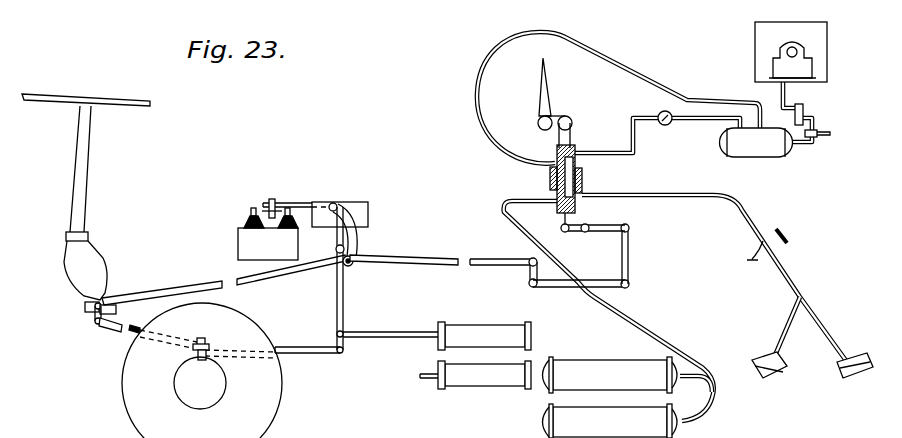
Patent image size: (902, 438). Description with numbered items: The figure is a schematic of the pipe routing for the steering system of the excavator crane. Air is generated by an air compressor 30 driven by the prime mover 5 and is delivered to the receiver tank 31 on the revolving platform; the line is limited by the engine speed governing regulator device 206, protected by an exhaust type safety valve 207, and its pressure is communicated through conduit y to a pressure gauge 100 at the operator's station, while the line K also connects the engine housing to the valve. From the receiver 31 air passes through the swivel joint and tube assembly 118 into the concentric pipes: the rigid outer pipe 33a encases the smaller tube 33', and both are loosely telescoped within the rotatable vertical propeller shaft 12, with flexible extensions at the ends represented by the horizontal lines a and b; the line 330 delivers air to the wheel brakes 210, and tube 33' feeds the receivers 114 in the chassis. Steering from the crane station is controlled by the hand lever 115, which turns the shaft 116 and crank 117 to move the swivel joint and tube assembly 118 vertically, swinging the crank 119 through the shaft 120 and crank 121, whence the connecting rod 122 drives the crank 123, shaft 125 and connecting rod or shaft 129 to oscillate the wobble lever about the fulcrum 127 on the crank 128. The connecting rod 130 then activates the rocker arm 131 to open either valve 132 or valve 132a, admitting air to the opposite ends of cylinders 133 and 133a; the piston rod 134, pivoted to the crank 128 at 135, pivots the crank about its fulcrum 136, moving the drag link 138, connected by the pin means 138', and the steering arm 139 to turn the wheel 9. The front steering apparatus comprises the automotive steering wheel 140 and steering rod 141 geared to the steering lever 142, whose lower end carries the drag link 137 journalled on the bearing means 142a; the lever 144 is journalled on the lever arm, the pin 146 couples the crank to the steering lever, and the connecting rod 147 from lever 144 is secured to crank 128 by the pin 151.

The automotive steering wheel 140 is at (82, 98).
The steering rod 141 is at (84, 168).
The lever 144 is at (105, 290).
The pin 146 is at (88, 306).
The steering lever 142 is at (112, 313).
The bearing means 142a is at (95, 321).
The drag link 137 is at (112, 332).
The connecting rod 147 is at (182, 290).
The steering arm 139 is at (193, 343).
The wheel 9 is at (240, 324).
The connecting rod 130 is at (290, 203).
The rocker arm 131 is at (268, 200).
The valve 132a is at (248, 221).
The valve 132 is at (294, 222).
The fulcrum 136 is at (338, 205).
The crank 128 is at (345, 298).
The fulcrum 127 is at (345, 248).
The pin 151 is at (352, 265).
The pivot connection 135 is at (345, 332).
The pin means 138' is at (363, 349).
The drag link 138 is at (307, 338).
The piston rod 134 is at (421, 332).
The cylinder 133 is at (486, 330).
The cylinder 133a is at (508, 386).
The receiver 114 is at (582, 368).
The connecting rod or shaft 129 is at (408, 258).
The shaft 125 is at (528, 283).
The crank 123 is at (579, 290).
The connecting rod 122 is at (630, 257).
The crank 119 is at (630, 228).
The shaft 120 is at (590, 228).
The crank 121 is at (583, 233).
The hand lever 115 is at (548, 72).
The shaft 116 is at (537, 123).
The crank 117 is at (563, 115).
The swivel joint and tube assembly 118 is at (571, 137).
The tube 33' is at (537, 177).
The rigid outer pipe 33a is at (604, 195).
The vertical propeller shaft 12 is at (583, 182).
The line 330 is at (586, 198).
The horizontal line a is at (555, 158).
The horizontal line b is at (616, 158).
The conduit y is at (513, 160).
The pressure gauge 100 is at (663, 122).
The receiver tank 31 is at (780, 157).
The prime mover 5 is at (805, 24).
The air compressor 30 is at (812, 65).
The pipe K is at (781, 104).
The engine speed governing regulator device 206 is at (803, 108).
The exhaust type safety valve 207 is at (818, 133).
The wheel brake 210 is at (770, 358).